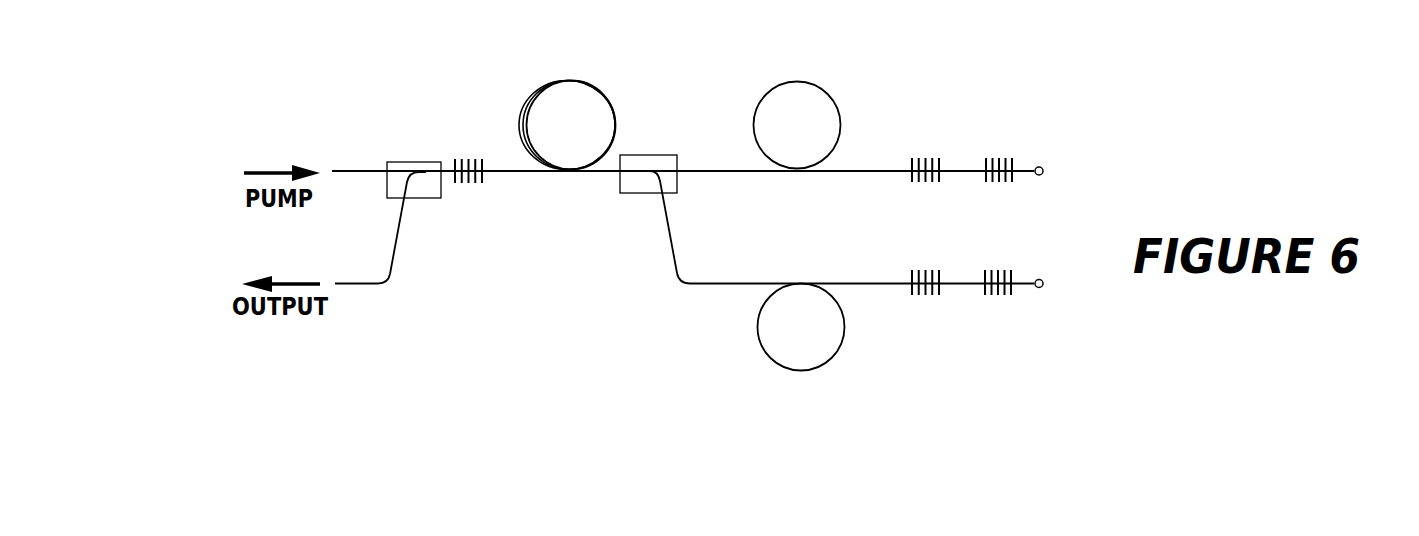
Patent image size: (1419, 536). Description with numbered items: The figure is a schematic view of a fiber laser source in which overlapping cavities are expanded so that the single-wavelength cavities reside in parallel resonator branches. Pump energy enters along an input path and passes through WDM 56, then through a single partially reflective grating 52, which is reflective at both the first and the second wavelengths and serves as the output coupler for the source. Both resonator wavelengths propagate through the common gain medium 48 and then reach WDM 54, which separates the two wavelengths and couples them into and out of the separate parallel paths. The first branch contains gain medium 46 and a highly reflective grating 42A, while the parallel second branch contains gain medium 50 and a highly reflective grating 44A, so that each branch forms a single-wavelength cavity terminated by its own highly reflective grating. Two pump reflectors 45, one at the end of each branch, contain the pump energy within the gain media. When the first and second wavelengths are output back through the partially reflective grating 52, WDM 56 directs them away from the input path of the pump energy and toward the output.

The highly reflective grating 42A is at (923, 152).
The highly reflective grating 44A is at (923, 266).
The pump reflector 45 is at (1002, 152).
The gain medium 46 is at (780, 80).
The gain medium 48 is at (575, 77).
The gain medium 50 is at (785, 375).
The partially reflective grating 52 is at (465, 155).
The WDM 54 is at (655, 152).
The WDM 56 is at (402, 161).